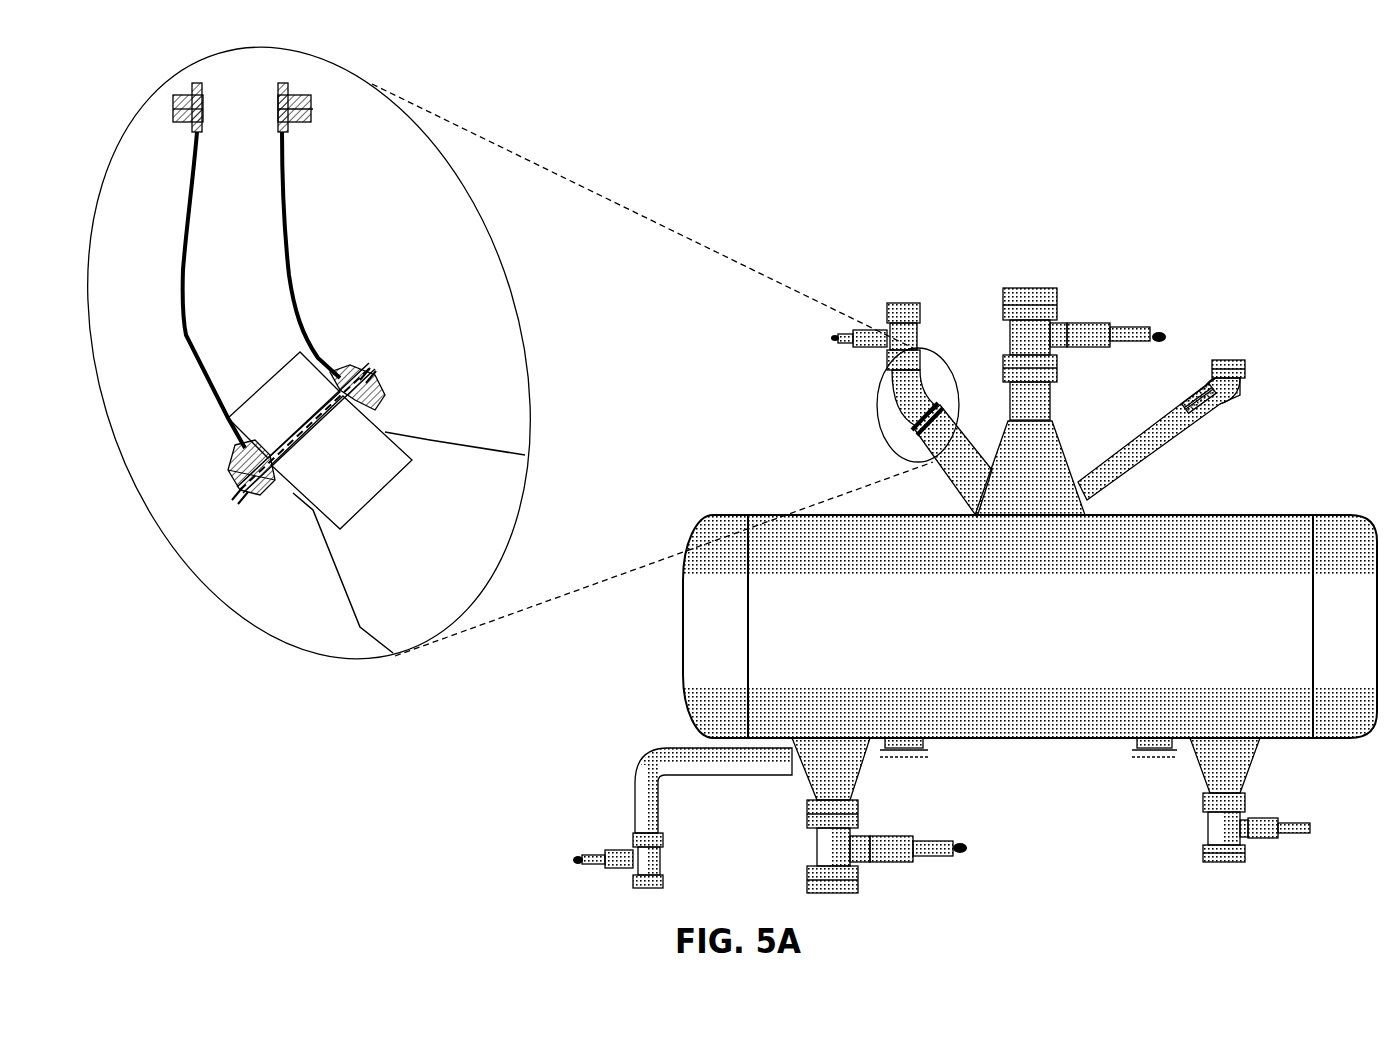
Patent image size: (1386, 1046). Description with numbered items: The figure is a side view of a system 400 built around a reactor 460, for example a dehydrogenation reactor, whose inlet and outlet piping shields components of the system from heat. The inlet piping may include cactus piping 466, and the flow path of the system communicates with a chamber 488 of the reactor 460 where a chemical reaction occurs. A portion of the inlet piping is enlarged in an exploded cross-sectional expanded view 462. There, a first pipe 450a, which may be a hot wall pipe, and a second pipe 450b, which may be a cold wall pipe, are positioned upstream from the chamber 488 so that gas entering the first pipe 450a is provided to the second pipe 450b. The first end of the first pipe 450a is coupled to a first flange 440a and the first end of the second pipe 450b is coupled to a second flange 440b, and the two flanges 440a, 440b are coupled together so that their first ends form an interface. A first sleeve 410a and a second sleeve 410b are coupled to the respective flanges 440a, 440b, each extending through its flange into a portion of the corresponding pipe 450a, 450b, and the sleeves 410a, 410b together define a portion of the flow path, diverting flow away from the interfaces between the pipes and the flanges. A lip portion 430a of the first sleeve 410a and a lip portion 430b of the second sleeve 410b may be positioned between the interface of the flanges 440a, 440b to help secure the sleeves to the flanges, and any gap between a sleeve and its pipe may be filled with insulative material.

The fluid handling system 400 is at (1241, 100).
The reactor 460 is at (1247, 310).
The expanded view 462 is at (524, 340).
The cactus piping 466 is at (1036, 465).
The chamber 488 is at (1258, 522).
The first sleeve 410a is at (298, 376).
The second sleeve 410b is at (340, 507).
The lip portion 430a is at (245, 492).
The lip portion 430b is at (240, 508).
The first flange 440a is at (343, 372).
The second flange 440b is at (367, 404).
The first pipe 450a is at (290, 246).
The second pipe 450b is at (500, 452).